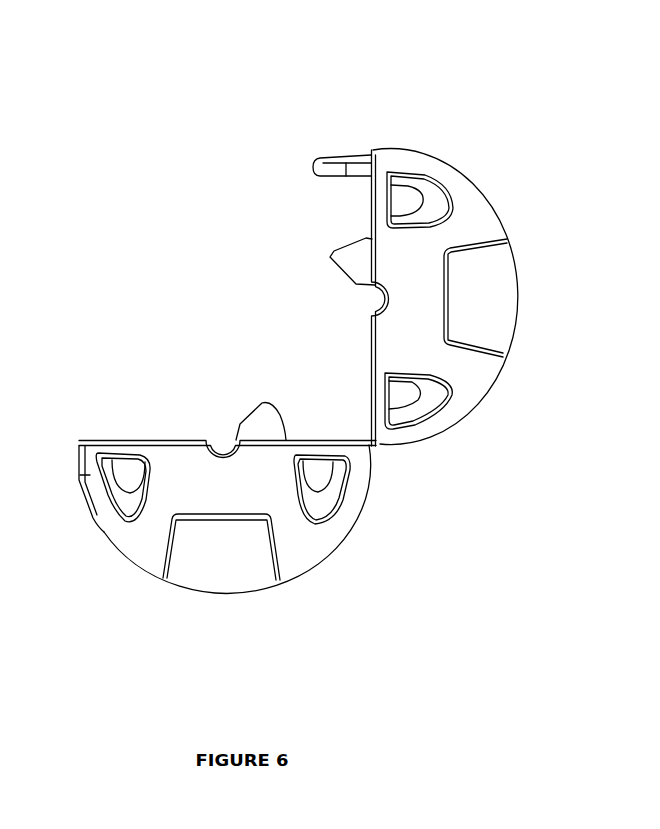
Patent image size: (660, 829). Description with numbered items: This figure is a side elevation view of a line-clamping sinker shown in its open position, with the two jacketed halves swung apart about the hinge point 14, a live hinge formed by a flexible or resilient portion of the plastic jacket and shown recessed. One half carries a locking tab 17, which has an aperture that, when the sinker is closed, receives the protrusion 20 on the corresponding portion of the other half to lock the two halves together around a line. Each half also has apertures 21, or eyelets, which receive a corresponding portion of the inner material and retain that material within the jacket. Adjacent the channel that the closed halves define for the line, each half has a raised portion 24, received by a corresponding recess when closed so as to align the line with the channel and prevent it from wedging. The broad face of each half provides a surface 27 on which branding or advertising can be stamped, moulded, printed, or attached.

The hinge point 14 is at (380, 451).
The locking tab 17 is at (322, 157).
The protrusion 20 is at (79, 481).
The apertures 21 is at (403, 387).
The raised portion 24 is at (255, 421).
The surface 27 is at (504, 302).